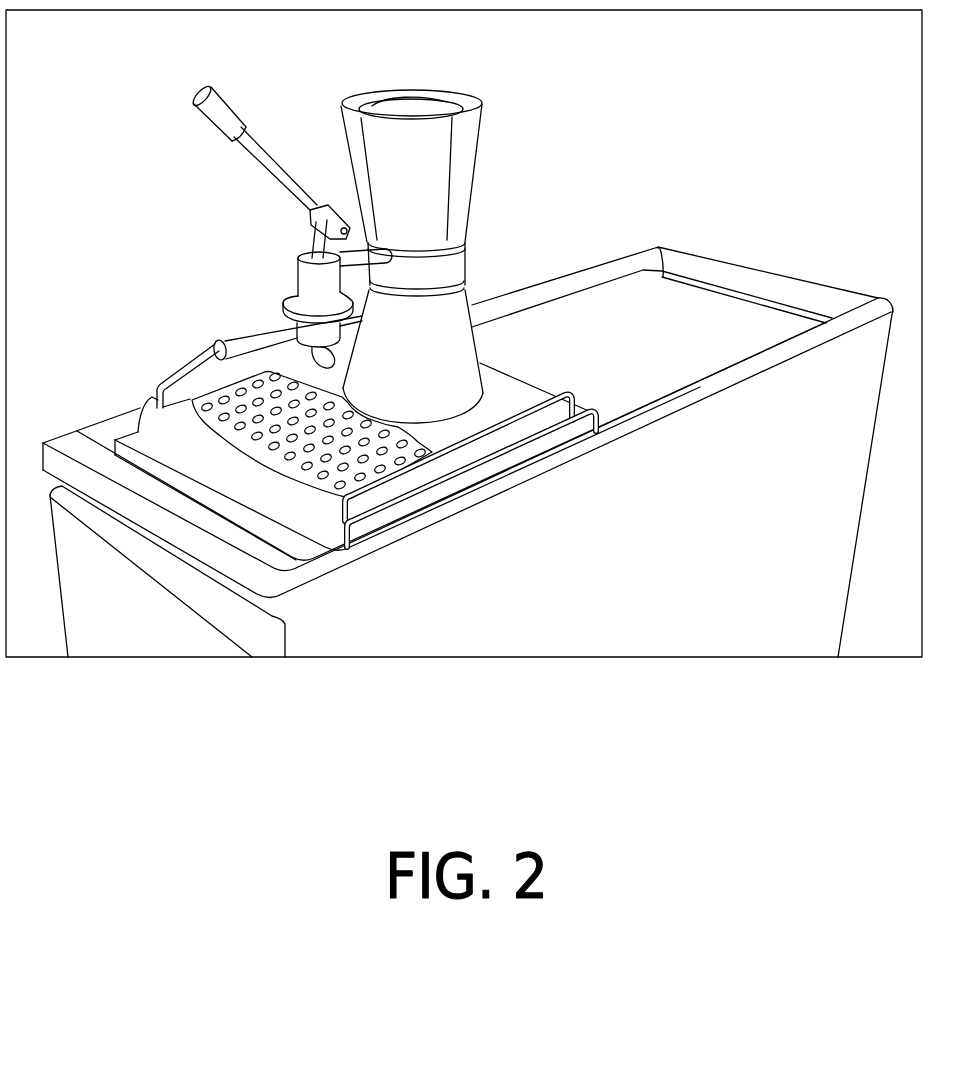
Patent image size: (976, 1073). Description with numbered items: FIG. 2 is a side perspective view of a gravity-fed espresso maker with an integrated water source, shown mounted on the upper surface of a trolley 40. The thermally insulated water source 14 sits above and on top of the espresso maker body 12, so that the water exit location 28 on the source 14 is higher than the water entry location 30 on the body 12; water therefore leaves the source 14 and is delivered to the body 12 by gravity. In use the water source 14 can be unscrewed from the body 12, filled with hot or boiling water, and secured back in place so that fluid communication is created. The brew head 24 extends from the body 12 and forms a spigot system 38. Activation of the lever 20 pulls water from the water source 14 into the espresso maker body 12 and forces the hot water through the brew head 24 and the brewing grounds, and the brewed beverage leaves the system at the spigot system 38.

The espresso maker body 12 is at (438, 375).
The thermally insulated water source 14 is at (481, 150).
The lever 20 is at (231, 102).
The brew head 24 is at (300, 305).
The water exit location 28 is at (400, 246).
The water entry location 30 is at (430, 290).
The spigot system 38 is at (216, 342).
The trolley 40 is at (728, 332).